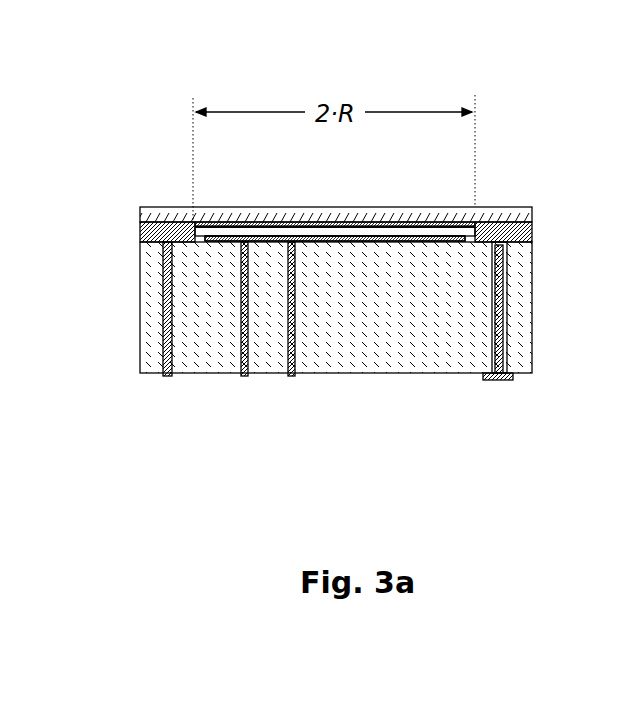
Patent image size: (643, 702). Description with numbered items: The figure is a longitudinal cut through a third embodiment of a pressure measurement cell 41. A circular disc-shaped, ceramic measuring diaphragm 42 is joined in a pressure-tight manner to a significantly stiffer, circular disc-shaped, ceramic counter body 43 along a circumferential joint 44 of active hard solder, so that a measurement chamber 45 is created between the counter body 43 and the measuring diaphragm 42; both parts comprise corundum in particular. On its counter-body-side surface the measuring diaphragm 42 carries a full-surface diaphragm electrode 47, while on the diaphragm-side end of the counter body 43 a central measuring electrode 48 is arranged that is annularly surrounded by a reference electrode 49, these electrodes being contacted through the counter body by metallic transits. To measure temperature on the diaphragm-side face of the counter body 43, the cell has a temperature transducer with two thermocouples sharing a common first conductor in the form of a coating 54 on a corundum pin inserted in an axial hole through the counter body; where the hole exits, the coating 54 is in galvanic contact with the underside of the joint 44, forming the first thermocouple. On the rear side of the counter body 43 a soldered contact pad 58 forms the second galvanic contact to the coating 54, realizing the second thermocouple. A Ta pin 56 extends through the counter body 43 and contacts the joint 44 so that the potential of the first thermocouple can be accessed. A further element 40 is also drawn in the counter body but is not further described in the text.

The pressure measurement cell 41 is at (157, 87).
The measuring diaphragm 42 is at (518, 210).
The counter body 43 is at (528, 325).
The circumferential joint 44 is at (530, 230).
The measurement chamber 45 is at (205, 240).
The diaphragm electrode 47 is at (234, 226).
The measuring electrode 48 is at (282, 243).
The reference electrode 49 is at (218, 242).
The post 40 is at (292, 376).
The coating 54 is at (510, 265).
The Ta pin 56 is at (165, 372).
The contact pad 58 is at (498, 380).